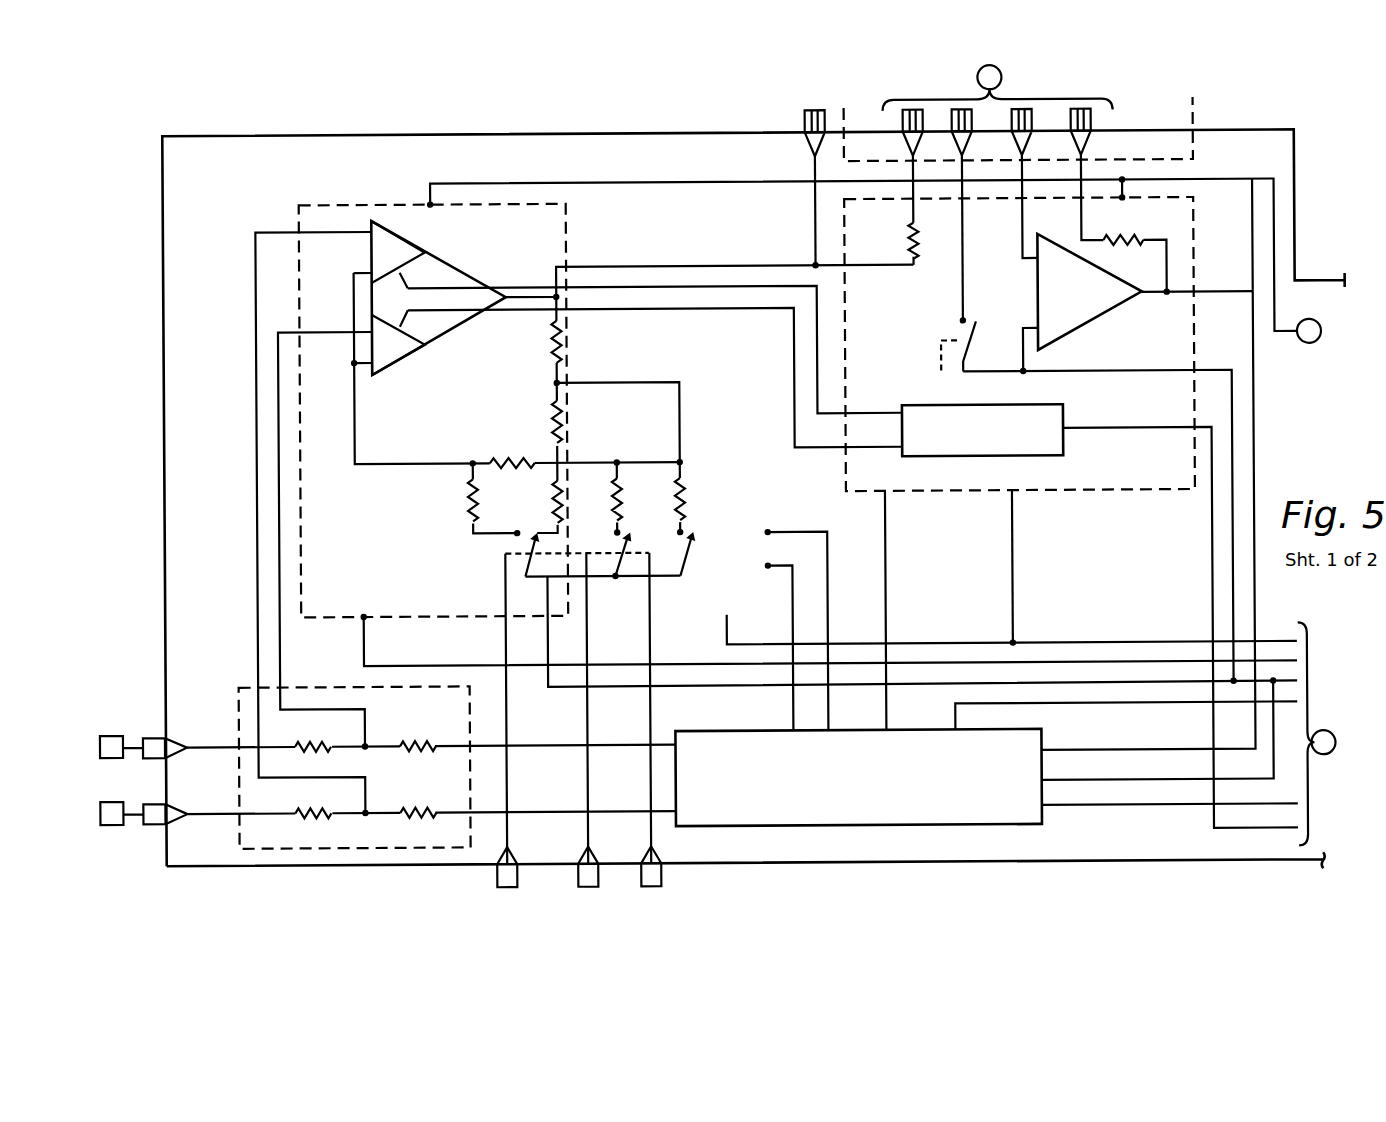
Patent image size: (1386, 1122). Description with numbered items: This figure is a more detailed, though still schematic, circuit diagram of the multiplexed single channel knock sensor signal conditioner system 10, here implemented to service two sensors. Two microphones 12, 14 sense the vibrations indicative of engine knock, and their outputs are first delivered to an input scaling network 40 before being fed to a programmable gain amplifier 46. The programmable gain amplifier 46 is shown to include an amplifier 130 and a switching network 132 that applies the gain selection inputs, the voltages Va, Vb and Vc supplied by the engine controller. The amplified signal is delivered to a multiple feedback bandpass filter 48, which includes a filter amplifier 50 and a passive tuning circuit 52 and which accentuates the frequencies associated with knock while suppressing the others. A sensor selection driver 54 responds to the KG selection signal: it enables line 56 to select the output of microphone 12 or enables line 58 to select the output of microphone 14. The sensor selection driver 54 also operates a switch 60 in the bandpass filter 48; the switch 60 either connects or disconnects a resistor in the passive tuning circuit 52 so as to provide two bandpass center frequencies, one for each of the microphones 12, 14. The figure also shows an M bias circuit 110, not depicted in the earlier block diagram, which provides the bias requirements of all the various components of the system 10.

The multiplexed single channel knock sensor signal conditioner system 10 is at (218, 105).
The microphone 12 is at (113, 732).
The microphone 14 is at (113, 822).
The input scaling network 40 is at (250, 686).
The programmable gain amplifier 46 is at (307, 203).
The multiple feedback bandpass filter 48 is at (1114, 492).
The filter amplifier 50 is at (1092, 298).
The passive tuning circuit 52 is at (1195, 110).
The sensor selection driver 54 is at (1041, 449).
The line 56 is at (795, 372).
The line 58 is at (795, 395).
The switch 60 is at (947, 332).
The M bias circuit 110 is at (870, 826).
The amplifier 130 is at (452, 270).
The switching network 132 is at (505, 580).